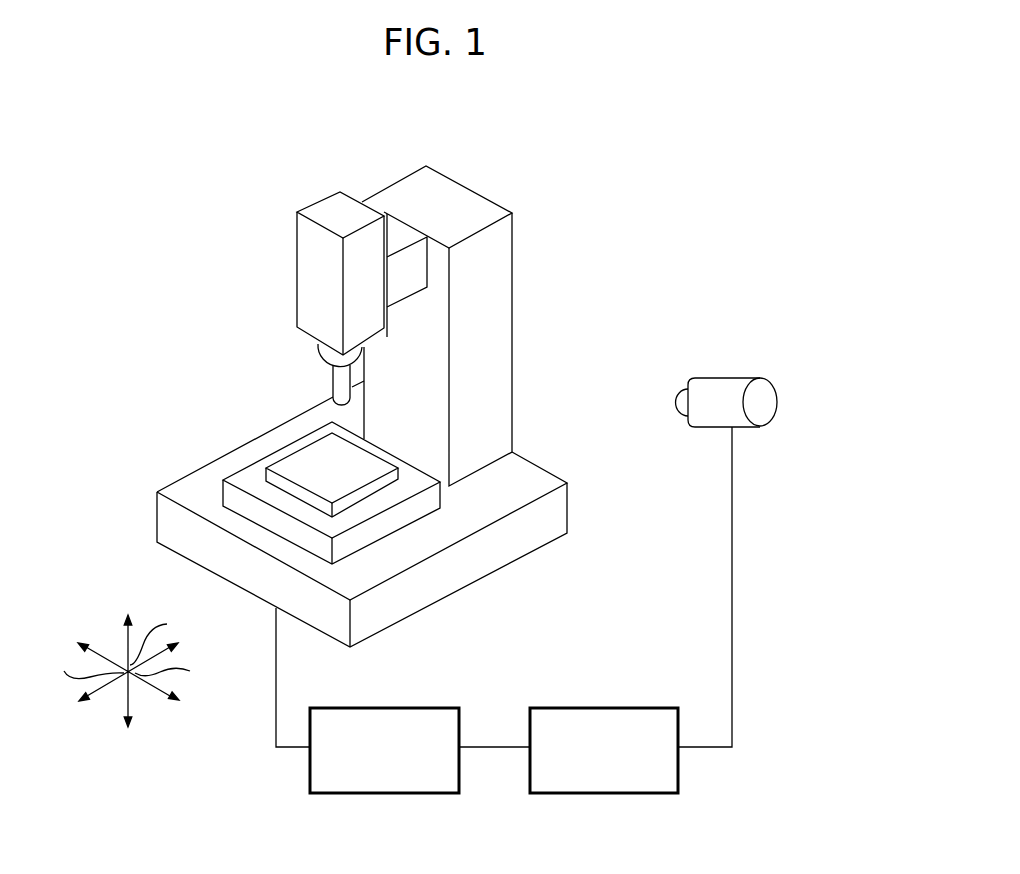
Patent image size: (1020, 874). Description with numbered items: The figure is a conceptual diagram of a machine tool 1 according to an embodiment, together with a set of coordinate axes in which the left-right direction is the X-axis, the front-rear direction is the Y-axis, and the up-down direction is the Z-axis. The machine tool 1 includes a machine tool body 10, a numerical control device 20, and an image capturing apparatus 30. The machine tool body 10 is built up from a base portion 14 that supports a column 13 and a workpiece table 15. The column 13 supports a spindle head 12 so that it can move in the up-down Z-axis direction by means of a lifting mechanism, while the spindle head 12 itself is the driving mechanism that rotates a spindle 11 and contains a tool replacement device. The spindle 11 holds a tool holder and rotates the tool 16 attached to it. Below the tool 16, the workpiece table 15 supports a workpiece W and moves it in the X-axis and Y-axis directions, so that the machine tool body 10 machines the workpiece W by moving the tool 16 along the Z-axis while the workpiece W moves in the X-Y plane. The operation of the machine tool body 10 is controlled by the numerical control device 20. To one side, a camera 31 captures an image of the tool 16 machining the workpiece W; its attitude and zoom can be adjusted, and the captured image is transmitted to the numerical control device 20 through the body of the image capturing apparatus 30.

The machine tool 1 is at (624, 118).
The machine tool body 10 is at (528, 242).
The spindle 11 is at (319, 352).
The spindle head 12 is at (332, 204).
The column 13 is at (510, 325).
The base portion 14 is at (403, 605).
The workpiece table 15 is at (236, 471).
The tool 16 is at (333, 392).
The workpiece W is at (297, 452).
The numerical control device 20 is at (368, 795).
The image capturing apparatus 30 is at (593, 795).
The camera 31 is at (733, 378).